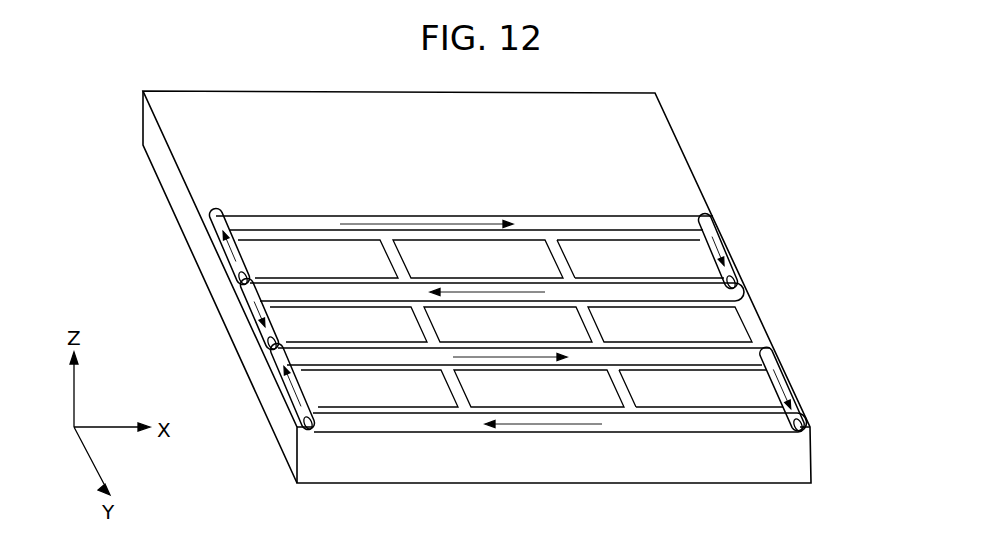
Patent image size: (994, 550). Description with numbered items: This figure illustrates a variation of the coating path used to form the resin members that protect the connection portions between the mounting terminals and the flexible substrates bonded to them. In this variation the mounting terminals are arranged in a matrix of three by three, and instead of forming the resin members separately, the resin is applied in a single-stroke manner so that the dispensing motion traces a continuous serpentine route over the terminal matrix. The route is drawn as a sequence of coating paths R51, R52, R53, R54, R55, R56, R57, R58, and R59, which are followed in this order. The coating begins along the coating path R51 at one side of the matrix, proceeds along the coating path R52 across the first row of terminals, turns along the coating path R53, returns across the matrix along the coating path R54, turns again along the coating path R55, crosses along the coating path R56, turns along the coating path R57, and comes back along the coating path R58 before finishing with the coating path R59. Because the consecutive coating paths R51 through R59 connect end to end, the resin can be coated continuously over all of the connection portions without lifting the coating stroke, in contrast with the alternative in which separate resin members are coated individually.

The coating path R51 is at (221, 246).
The coating path R52 is at (462, 204).
The coating path R53 is at (720, 245).
The coating path R54 is at (742, 290).
The coating path R55 is at (249, 318).
The coating path R56 is at (742, 355).
The coating path R57 is at (773, 362).
The coating path R58 is at (801, 431).
The coating path R59 is at (288, 405).